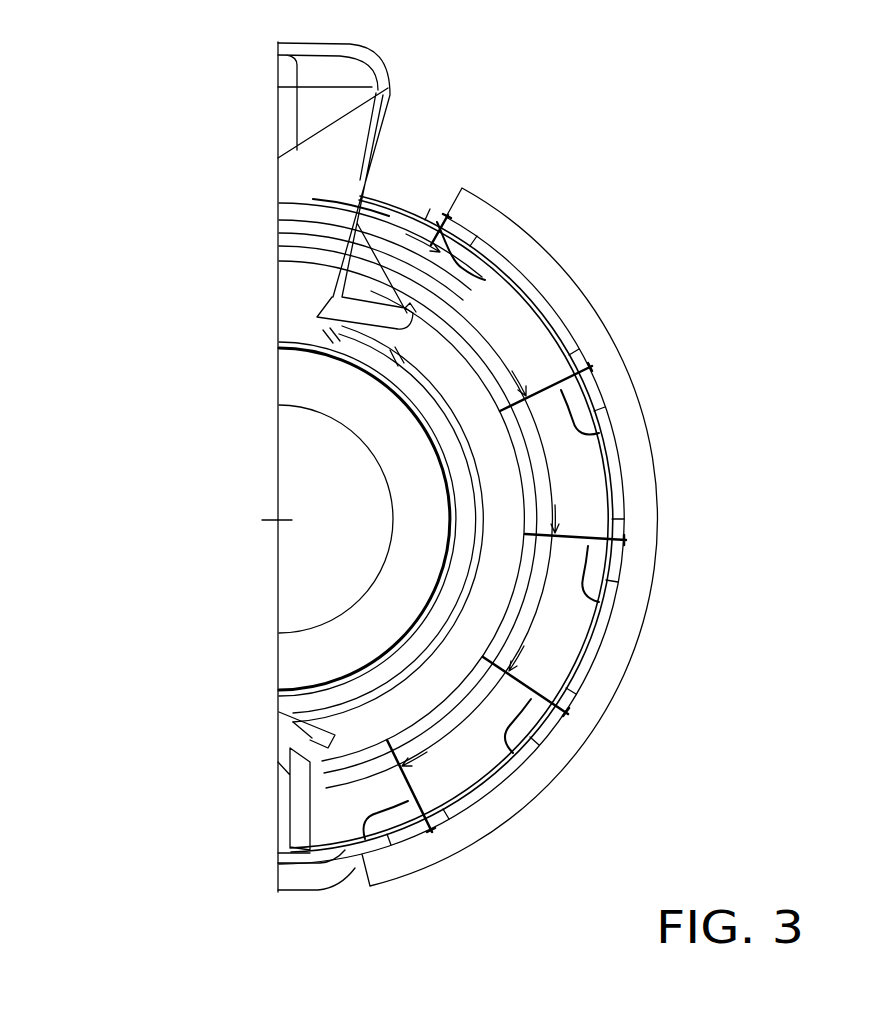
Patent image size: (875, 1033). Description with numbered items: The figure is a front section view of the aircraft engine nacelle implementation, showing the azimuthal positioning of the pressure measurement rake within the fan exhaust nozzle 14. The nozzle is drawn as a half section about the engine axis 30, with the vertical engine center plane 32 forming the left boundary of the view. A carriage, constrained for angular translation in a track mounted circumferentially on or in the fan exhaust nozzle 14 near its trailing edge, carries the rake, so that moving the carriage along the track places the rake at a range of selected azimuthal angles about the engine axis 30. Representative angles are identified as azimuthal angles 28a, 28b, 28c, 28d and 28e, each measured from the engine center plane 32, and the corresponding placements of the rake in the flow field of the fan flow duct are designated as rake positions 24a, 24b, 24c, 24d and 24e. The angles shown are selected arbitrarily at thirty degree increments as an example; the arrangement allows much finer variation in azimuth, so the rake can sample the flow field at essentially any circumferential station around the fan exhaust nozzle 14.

The fan exhaust nozzle 14 is at (617, 347).
The rake position 24a is at (485, 280).
The rake position 24b is at (575, 432).
The rake position 24c is at (580, 558).
The rake position 24d is at (530, 753).
The rake position 24e is at (400, 790).
The azimuthal angle 28a is at (423, 314).
The azimuthal angle 28b is at (512, 332).
The azimuthal angle 28c is at (557, 458).
The azimuthal angle 28d is at (537, 617).
The azimuthal angle 28e is at (447, 745).
The engine axis 30 is at (268, 518).
The engine center plane 32 is at (278, 182).